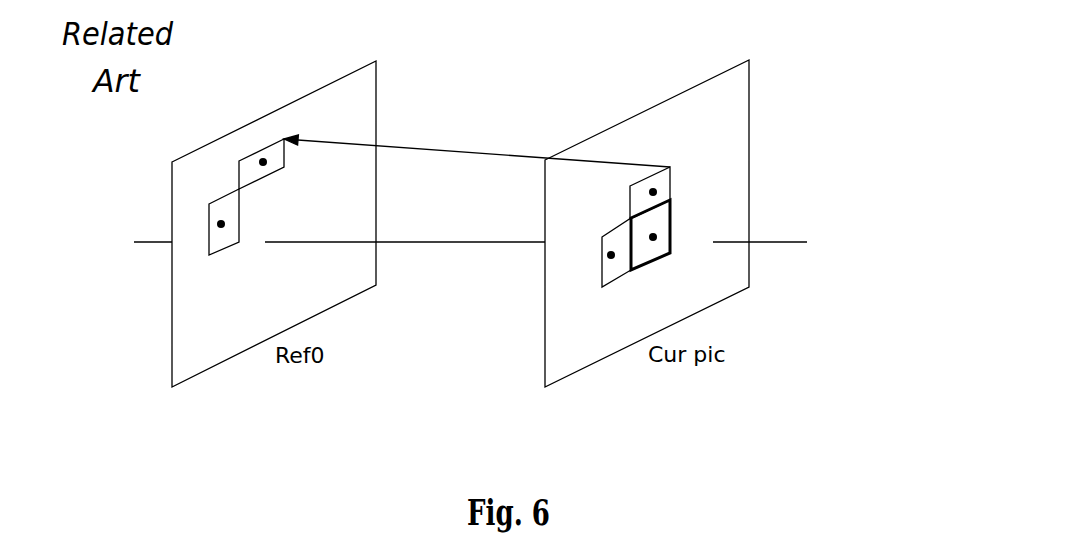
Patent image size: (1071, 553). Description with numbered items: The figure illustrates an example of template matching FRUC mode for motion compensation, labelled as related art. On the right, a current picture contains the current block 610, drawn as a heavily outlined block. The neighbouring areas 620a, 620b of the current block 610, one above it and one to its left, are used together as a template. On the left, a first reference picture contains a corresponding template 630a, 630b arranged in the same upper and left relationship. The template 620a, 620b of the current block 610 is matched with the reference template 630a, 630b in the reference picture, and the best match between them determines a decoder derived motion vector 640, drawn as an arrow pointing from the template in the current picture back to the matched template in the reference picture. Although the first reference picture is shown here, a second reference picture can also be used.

The current block 610 is at (653, 237).
The neighbouring area 620a is at (653, 192).
The neighbouring area 620b is at (611, 255).
The corresponding template 630a is at (263, 162).
The corresponding template 630b is at (221, 224).
The decoder derived motion vector 640 is at (476, 152).